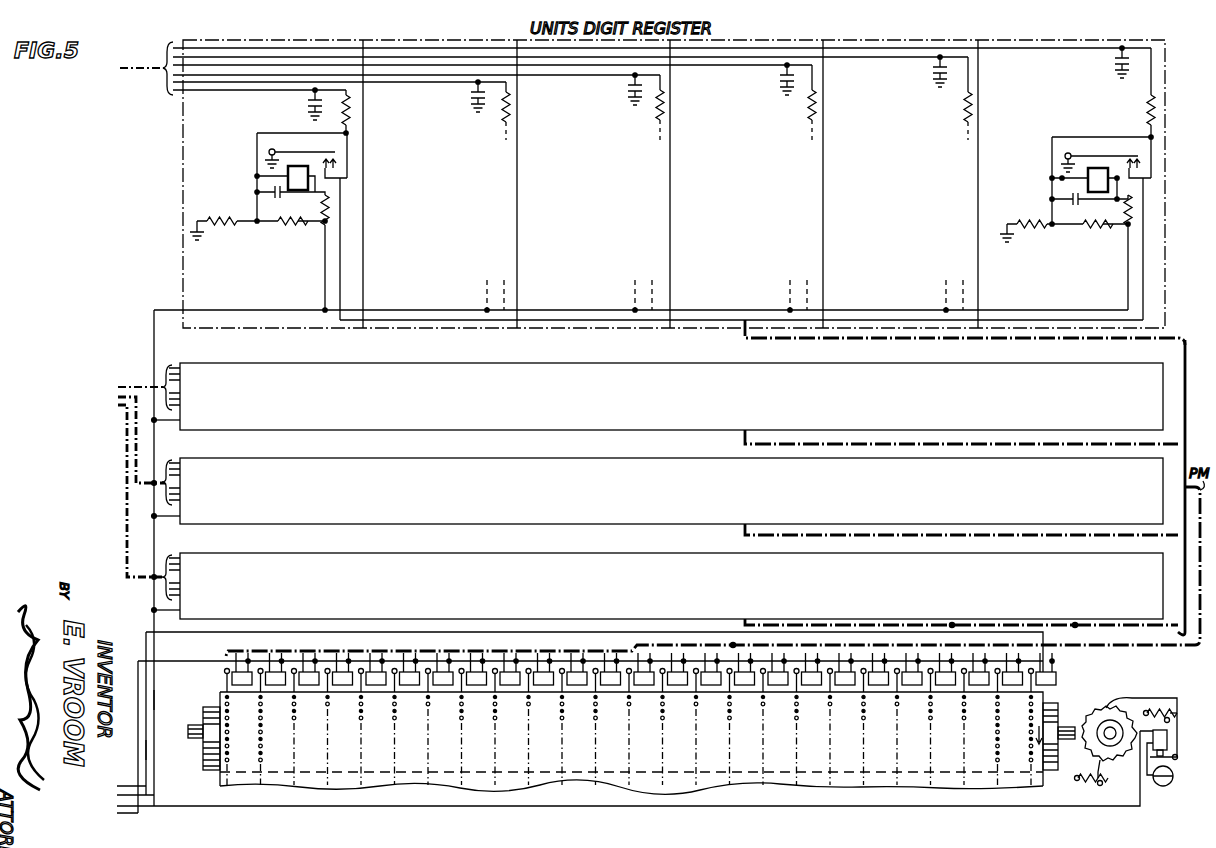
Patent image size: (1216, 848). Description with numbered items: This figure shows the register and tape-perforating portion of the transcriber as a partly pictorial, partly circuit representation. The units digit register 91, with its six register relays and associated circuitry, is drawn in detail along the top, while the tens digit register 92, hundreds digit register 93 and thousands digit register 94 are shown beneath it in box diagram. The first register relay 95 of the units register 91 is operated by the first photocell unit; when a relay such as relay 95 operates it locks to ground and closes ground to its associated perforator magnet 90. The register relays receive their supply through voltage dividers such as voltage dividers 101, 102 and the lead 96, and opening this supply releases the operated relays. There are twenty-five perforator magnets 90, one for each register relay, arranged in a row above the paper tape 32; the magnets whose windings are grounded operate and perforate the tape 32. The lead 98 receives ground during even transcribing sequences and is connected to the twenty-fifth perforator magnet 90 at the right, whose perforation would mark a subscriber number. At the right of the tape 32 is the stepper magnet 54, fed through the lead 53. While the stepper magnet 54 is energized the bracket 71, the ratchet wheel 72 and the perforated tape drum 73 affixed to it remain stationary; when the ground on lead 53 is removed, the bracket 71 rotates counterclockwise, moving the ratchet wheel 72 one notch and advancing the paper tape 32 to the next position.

The paper tape 32 is at (222, 777).
The lead 53 is at (236, 806).
The stepper magnet 54 is at (1167, 741).
The bracket 71 is at (1175, 714).
The ratchet wheel 72 is at (1102, 708).
The perforated tape drum 73 is at (1050, 772).
The perforator magnet 90 is at (230, 680).
The units digit register 91 is at (1013, 41).
The tens digit register 92 is at (220, 363).
The hundreds digit register 93 is at (220, 458).
The thousands digit register 94 is at (220, 553).
The register relay 95 is at (288, 193).
The lead 96 is at (154, 750).
The lead 98 is at (154, 700).
The voltage divider 101 is at (282, 226).
The voltage divider 102 is at (1070, 228).